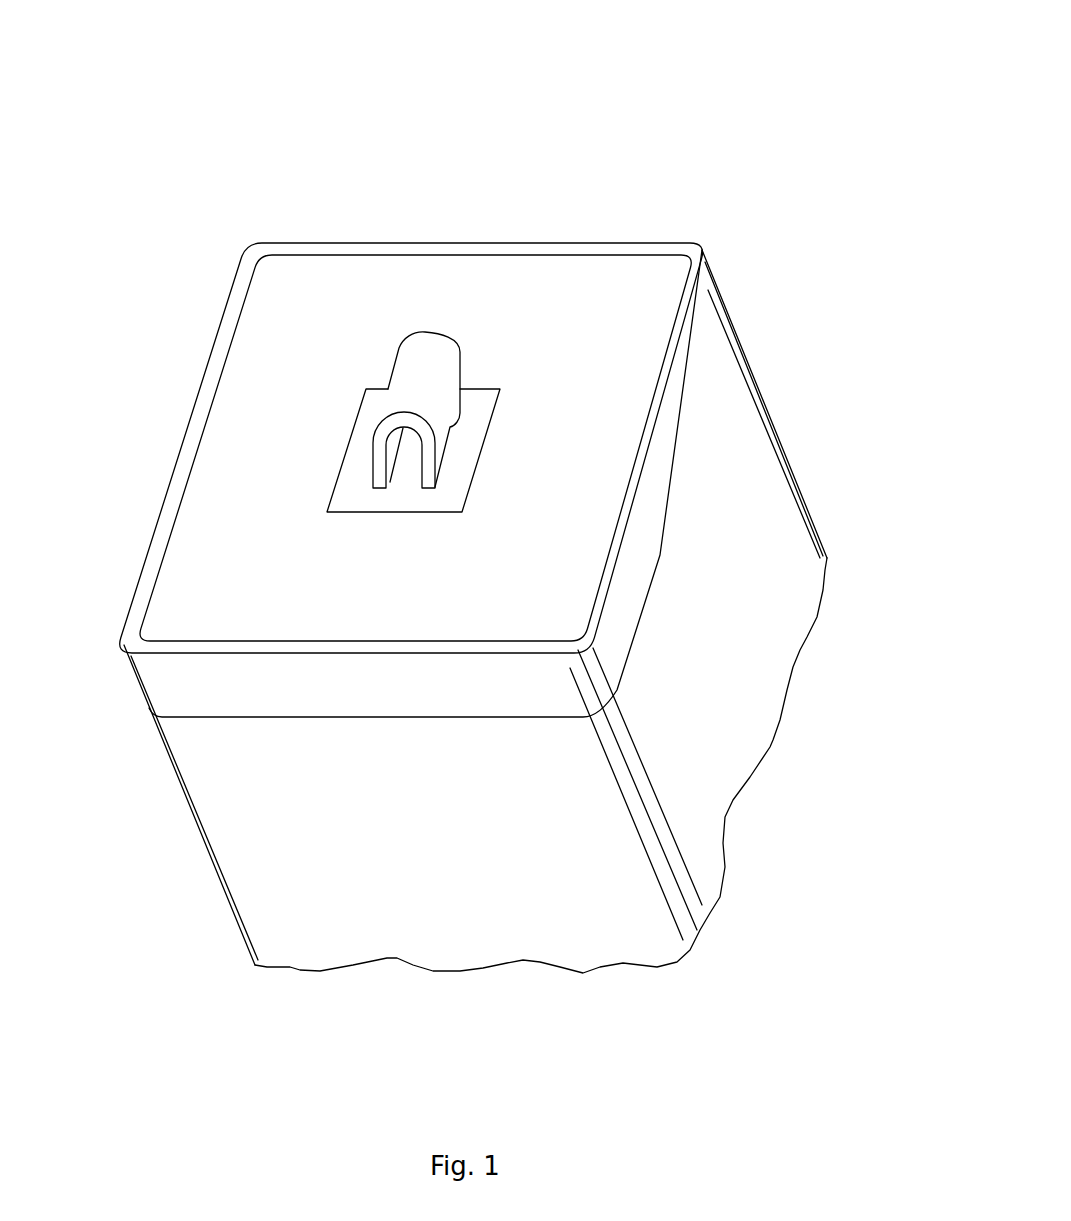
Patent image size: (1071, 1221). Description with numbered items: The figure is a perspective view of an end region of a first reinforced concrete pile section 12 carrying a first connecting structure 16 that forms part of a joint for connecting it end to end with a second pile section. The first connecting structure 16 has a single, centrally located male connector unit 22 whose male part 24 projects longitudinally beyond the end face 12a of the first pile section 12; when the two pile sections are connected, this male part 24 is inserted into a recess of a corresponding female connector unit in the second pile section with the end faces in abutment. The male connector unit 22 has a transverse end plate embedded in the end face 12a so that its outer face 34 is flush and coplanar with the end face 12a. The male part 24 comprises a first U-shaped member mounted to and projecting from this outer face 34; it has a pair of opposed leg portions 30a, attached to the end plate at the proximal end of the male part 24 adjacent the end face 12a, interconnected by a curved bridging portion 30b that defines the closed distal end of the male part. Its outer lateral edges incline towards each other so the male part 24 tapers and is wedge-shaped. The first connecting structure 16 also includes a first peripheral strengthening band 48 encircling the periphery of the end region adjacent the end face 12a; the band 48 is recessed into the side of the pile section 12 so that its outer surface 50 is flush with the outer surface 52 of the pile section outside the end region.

The first reinforced concrete pile section 12 is at (755, 635).
The end face of the first pile section 12a is at (228, 490).
The first connecting structure 16 is at (198, 176).
The male connector unit 22 is at (441, 415).
The male part 24 is at (392, 428).
The leg portions 30a is at (445, 417).
The curved bridging portion 30b is at (427, 347).
The outer face of the transverse end plate 34 is at (460, 485).
The first peripheral strengthening band 48 is at (324, 247).
The outer surface of the peripheral band 50 is at (712, 330).
The outer surface of the pile section 52 is at (758, 478).